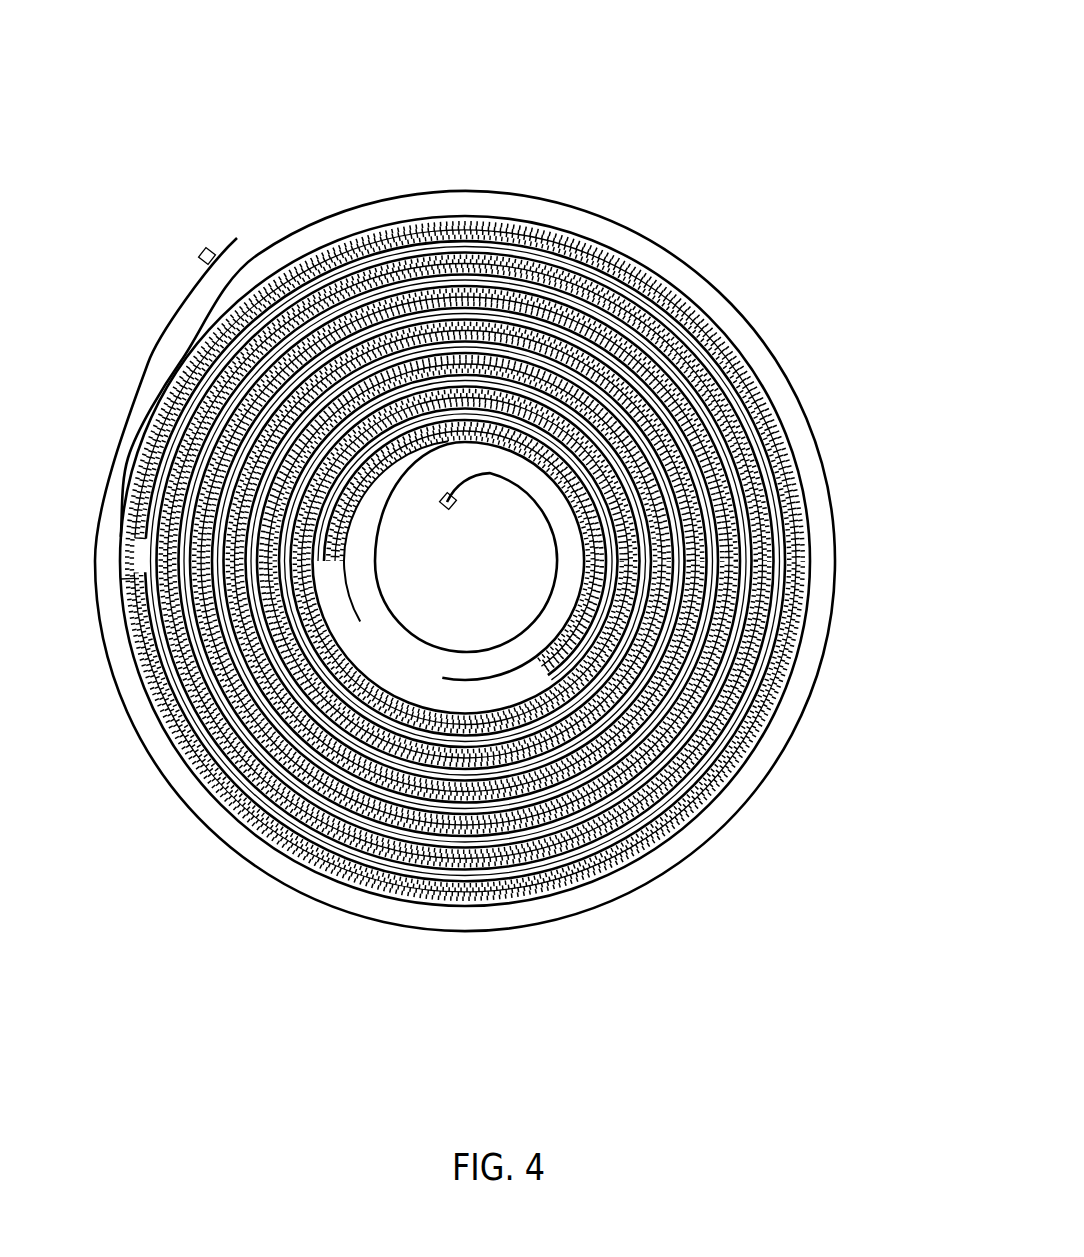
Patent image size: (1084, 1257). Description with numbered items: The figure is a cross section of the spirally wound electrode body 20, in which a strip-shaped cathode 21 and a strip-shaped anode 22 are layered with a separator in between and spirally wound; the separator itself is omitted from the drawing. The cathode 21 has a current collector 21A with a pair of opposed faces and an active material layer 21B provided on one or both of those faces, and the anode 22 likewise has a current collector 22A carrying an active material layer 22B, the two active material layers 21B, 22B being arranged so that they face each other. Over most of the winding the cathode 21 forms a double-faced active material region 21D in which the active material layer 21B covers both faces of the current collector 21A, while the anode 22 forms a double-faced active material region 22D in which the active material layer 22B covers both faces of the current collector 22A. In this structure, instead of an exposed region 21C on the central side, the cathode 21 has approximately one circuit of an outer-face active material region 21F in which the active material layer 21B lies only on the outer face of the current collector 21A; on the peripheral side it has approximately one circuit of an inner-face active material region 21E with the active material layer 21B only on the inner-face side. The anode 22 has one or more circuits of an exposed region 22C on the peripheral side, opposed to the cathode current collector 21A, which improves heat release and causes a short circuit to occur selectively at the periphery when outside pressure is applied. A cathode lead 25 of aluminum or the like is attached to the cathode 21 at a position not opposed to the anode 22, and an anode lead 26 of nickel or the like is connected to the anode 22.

The spirally wound electrode body 20 is at (705, 89).
The cathode 21 is at (610, 123).
The current collector 21A is at (445, 283).
The active material layer 21B is at (580, 287).
The exposed region 21C is at (532, 462).
The double-faced active material region 21D is at (788, 528).
The inner-face active material region 21E is at (801, 395).
The outer-face active material region 21F is at (545, 655).
The anode 22 is at (612, 1028).
The current collector 22A is at (450, 878).
The active material layer 22B is at (577, 850).
The exposed region 22C is at (157, 296).
The double-faced active material region 22D is at (690, 795).
The cathode lead 25 is at (455, 505).
The anode lead 26 is at (205, 252).